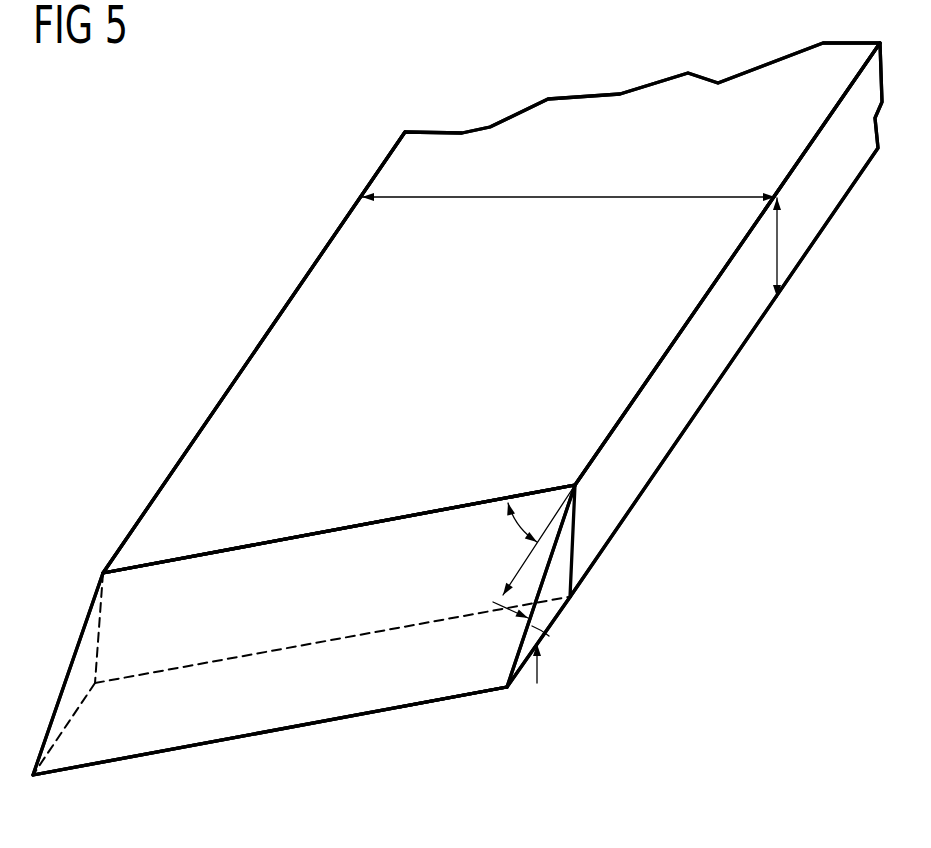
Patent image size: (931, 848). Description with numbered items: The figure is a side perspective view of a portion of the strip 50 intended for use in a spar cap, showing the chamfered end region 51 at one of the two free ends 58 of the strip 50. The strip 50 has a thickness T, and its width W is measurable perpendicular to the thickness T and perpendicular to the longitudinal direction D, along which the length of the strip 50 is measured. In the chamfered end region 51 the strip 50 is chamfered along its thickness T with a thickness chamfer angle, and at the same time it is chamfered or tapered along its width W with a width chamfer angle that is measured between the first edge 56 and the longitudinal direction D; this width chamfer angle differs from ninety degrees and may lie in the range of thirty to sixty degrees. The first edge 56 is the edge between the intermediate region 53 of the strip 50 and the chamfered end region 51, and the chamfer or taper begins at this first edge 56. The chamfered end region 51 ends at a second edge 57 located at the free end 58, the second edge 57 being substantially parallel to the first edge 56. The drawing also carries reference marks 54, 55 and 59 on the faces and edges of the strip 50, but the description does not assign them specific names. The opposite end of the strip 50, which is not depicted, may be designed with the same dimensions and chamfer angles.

The strip 50 is at (276, 306).
The chamfered end region 51 is at (550, 613).
The intermediate region 53 is at (395, 168).
The top face (rake face) 54 is at (478, 352).
The side face 55 is at (704, 417).
The first edge 56 is at (350, 528).
The second edge 57 is at (250, 738).
The free end 58 is at (395, 712).
The front bottom edge 59 is at (454, 687).
The width W is at (568, 199).
The thickness T is at (777, 239).
The longitudinal direction D is at (520, 568).